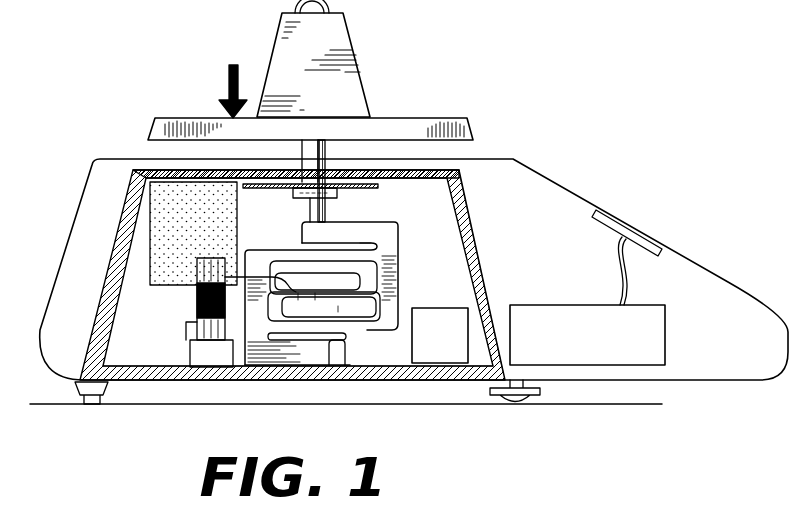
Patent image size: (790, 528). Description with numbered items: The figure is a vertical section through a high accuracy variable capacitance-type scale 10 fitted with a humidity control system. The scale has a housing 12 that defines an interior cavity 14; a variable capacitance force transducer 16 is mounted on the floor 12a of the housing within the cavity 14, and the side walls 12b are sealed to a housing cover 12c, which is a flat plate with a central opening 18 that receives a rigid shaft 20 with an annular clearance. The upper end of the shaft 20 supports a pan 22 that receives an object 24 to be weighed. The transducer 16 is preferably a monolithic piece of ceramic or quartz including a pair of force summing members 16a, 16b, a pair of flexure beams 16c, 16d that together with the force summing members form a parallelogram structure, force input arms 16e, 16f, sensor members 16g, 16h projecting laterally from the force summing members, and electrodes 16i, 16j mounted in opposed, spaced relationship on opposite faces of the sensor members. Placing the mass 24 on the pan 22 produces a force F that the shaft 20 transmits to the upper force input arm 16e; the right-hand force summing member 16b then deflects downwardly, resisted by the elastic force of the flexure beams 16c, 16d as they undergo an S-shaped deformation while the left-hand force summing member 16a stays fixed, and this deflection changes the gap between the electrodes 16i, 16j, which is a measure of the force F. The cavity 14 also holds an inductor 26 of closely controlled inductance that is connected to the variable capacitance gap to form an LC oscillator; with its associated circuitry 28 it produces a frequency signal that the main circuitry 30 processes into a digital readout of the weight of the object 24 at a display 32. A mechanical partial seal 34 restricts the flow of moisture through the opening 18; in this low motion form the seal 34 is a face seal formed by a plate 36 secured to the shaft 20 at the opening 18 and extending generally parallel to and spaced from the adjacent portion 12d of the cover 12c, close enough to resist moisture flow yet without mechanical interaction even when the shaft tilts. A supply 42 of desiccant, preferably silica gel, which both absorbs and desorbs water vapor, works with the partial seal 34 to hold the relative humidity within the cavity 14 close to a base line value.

The scale 10 is at (414, 244).
The housing 12 is at (108, 195).
The floor 12a is at (154, 366).
The side walls 12b is at (477, 240).
The housing cover 12c is at (404, 180).
The adjacent portion of the housing cover 12d is at (372, 170).
The interior cavity 14 is at (480, 268).
The variable capacitance force transducer 16 is at (333, 324).
The force summing member 16a is at (250, 335).
The force summing member 16b is at (399, 268).
The flexure beam 16c is at (359, 252).
The flexure beam 16d is at (365, 331).
The upper force input arm 16e is at (352, 244).
The force input arm 16f is at (344, 352).
The sensor member 16g is at (370, 280).
The sensor member 16h is at (338, 305).
The electrode 16i is at (298, 292).
The electrode 16j is at (315, 292).
The central opening 18 is at (300, 166).
The rigid shaft 20 is at (328, 150).
The pan 22 is at (193, 118).
The object 24 is at (365, 70).
The inductor 26 is at (197, 297).
The associated circuitry 28 is at (432, 357).
The main circuitry 30 is at (577, 305).
The display 32 is at (634, 222).
The mechanical partial seal 34 is at (345, 195).
The plate 36 is at (277, 190).
The supply of desiccant 42 is at (157, 238).
The force F is at (228, 76).